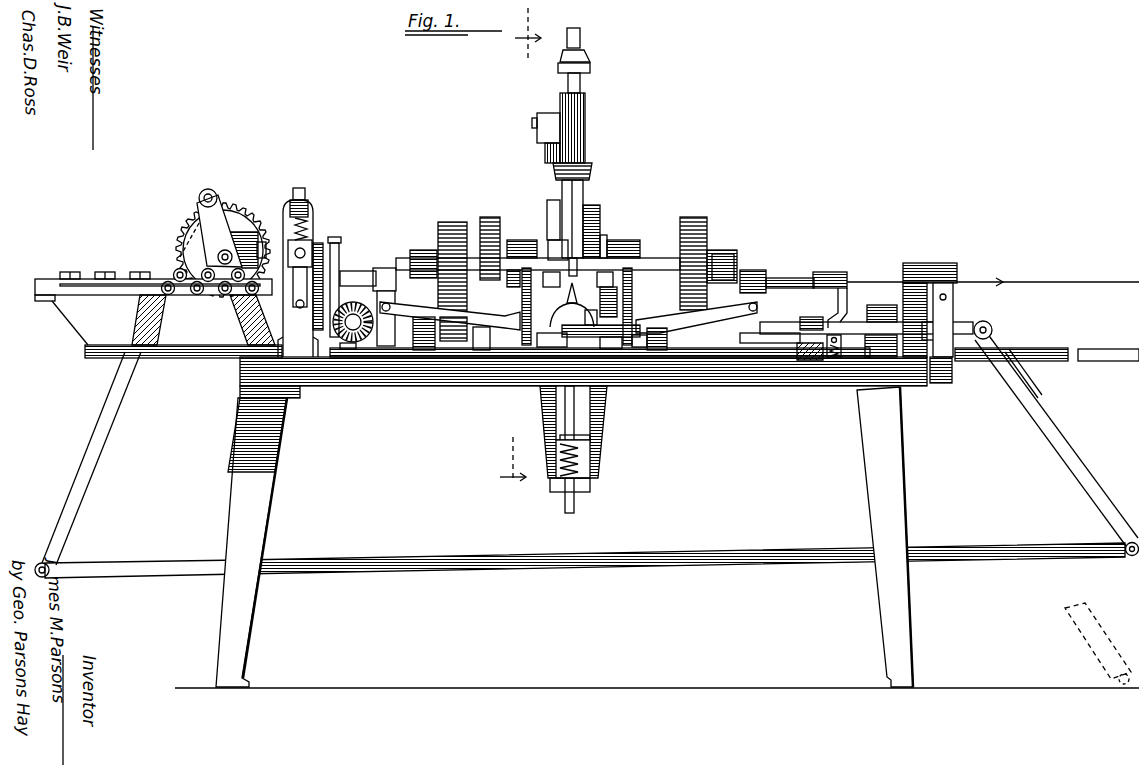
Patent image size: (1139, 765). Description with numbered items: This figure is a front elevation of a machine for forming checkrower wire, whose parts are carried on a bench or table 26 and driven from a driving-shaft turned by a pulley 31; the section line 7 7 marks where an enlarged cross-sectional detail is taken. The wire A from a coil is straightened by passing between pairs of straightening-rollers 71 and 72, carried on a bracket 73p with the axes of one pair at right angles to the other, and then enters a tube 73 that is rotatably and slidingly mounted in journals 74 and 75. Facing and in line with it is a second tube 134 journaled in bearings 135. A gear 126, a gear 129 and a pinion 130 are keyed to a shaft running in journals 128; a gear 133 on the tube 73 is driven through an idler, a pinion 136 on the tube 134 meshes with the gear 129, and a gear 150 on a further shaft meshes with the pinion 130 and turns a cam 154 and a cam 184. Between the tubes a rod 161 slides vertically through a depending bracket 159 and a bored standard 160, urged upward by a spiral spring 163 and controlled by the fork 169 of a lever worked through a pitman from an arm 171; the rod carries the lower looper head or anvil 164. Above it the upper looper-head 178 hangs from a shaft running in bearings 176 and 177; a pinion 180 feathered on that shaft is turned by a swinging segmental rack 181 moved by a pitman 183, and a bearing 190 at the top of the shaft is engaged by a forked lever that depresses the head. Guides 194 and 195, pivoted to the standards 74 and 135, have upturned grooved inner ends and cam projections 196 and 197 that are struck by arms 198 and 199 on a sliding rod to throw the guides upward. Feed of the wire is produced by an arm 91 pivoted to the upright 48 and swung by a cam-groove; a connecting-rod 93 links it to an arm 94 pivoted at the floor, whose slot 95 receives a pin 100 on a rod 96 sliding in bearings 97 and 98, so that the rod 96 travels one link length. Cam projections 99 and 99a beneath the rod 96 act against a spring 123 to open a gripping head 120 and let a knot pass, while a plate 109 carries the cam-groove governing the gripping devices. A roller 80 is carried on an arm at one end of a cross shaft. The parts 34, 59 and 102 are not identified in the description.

The wire A is at (48, 280).
The section line 7 7 is at (520, 253).
The bench or table 26 is at (423, 350).
The pulley 31 is at (930, 263).
The ratchet wheel 34 is at (362, 350).
The upright 48 is at (245, 322).
The spring-pressed column 59 is at (313, 216).
The straightening-rollers 71 is at (74, 267).
The straightening-rollers 72 is at (185, 222).
The tube 73 is at (360, 271).
The bracket 73p is at (125, 292).
The journal 74 is at (390, 268).
The journal 75 is at (450, 311).
The roller 80 is at (263, 250).
The arm 91 is at (108, 430).
The connecting-rod 93 is at (467, 562).
The arm 94 is at (1092, 483).
The slot 95 is at (1010, 362).
The rod 96 is at (860, 325).
The bearing 97 is at (914, 330).
The bearing 98 is at (812, 317).
The cam projection 99 is at (803, 360).
The cam projection 99a is at (585, 440).
The pin 100 is at (991, 327).
The foot block 102 is at (942, 385).
The plate 109 is at (1102, 361).
The head 120 is at (838, 272).
The spring 123 is at (833, 357).
The gear 126 is at (455, 222).
The journals 128 is at (425, 250).
The gear 129 is at (697, 217).
The pinion 130 is at (500, 240).
The gear 133 is at (522, 241).
The tube 134 is at (780, 278).
The bearings 135 is at (756, 265).
The pinion 136 is at (720, 252).
The gear 150 is at (548, 212).
The cam 154 is at (627, 241).
The bracket 159 is at (595, 469).
The standard 160 is at (540, 393).
The rod 161 is at (556, 428).
The spiral spring 163 is at (592, 490).
The lower looper head or anvil 164 is at (589, 310).
The fork 169 is at (595, 450).
The arm 171 is at (556, 240).
The bearing 176 is at (586, 125).
The bearing 177 is at (584, 195).
The upper looper-head 178 is at (605, 243).
The pinion 180 is at (591, 170).
The swinging segmental rack 181 is at (545, 152).
The pitman 183 is at (537, 132).
The cam 184 is at (600, 225).
The bearing 190 is at (590, 58).
The guide 194 is at (460, 341).
The guide 195 is at (657, 350).
The cam projection 196 is at (567, 340).
The cam projection 197 is at (678, 298).
The arm 198 is at (480, 352).
The arm 199 is at (593, 340).